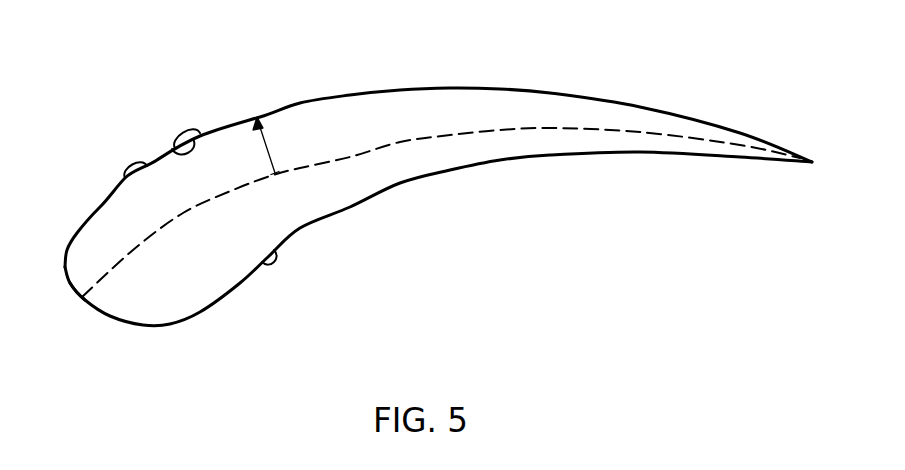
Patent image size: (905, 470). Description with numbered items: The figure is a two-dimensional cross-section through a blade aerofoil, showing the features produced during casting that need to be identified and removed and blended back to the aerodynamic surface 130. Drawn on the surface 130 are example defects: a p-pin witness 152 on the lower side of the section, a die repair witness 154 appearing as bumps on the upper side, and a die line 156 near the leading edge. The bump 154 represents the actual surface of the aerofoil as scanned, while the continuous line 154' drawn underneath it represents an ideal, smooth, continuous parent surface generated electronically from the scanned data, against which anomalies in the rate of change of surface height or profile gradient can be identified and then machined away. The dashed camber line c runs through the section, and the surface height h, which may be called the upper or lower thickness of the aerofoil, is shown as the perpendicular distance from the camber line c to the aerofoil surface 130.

The aerodynamic surface 130 is at (498, 88).
The p-pin witness 152 is at (278, 255).
The die repair witness 154 is at (136, 116).
The parent surface 154' is at (134, 95).
The die line 156 is at (80, 297).
The surface height h is at (274, 146).
The camber line c is at (468, 132).